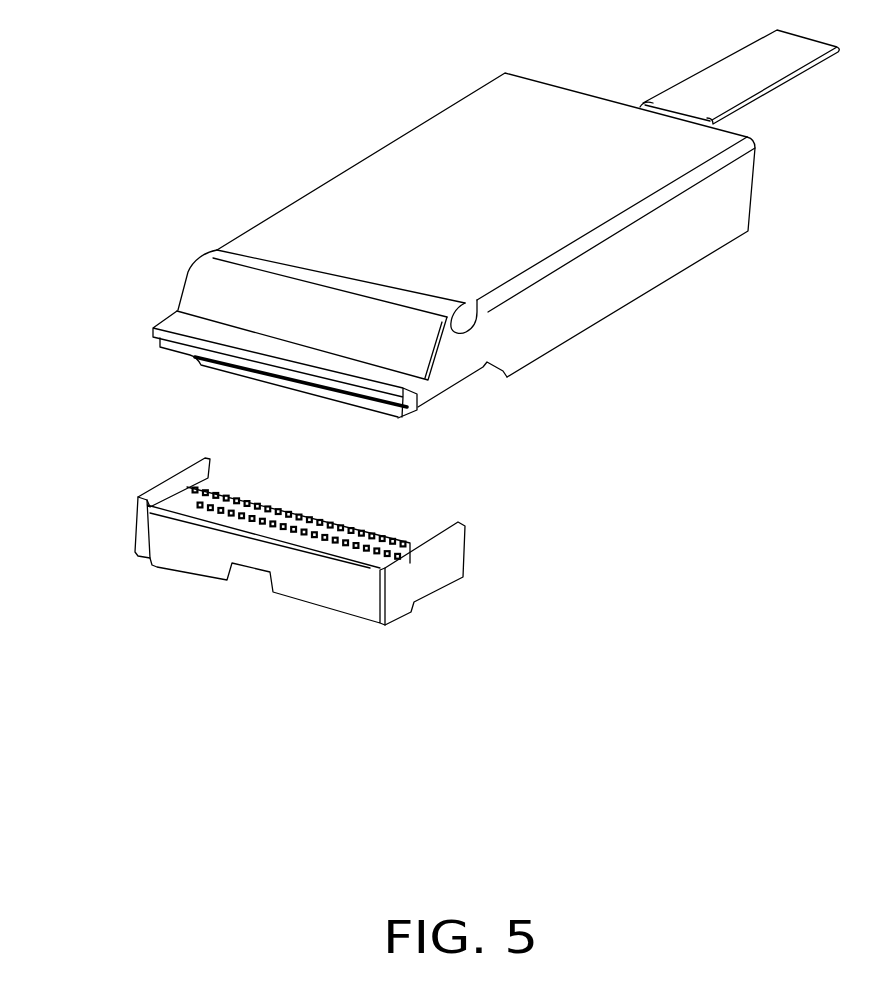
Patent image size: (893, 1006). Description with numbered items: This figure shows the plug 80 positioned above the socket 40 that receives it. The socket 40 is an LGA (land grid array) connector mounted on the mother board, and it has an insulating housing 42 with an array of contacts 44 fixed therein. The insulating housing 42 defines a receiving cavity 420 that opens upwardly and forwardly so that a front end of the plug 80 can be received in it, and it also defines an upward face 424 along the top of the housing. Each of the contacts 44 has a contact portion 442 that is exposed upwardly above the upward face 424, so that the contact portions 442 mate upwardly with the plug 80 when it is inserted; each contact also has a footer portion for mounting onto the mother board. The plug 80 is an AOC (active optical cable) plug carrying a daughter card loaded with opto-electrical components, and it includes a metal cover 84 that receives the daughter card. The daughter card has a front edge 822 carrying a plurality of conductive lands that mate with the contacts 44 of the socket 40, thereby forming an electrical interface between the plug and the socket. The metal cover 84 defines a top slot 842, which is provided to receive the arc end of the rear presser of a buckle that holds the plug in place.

The plug 80 is at (378, 137).
The metal cover 84 is at (328, 202).
The top slot 842 is at (273, 258).
The front edge 822 is at (220, 367).
The socket 40 is at (178, 445).
The receiving cavity 420 is at (183, 483).
The upward face 424 is at (220, 488).
The contact portion 442 is at (382, 532).
The contacts 44 is at (407, 535).
The insulating housing 42 is at (433, 572).